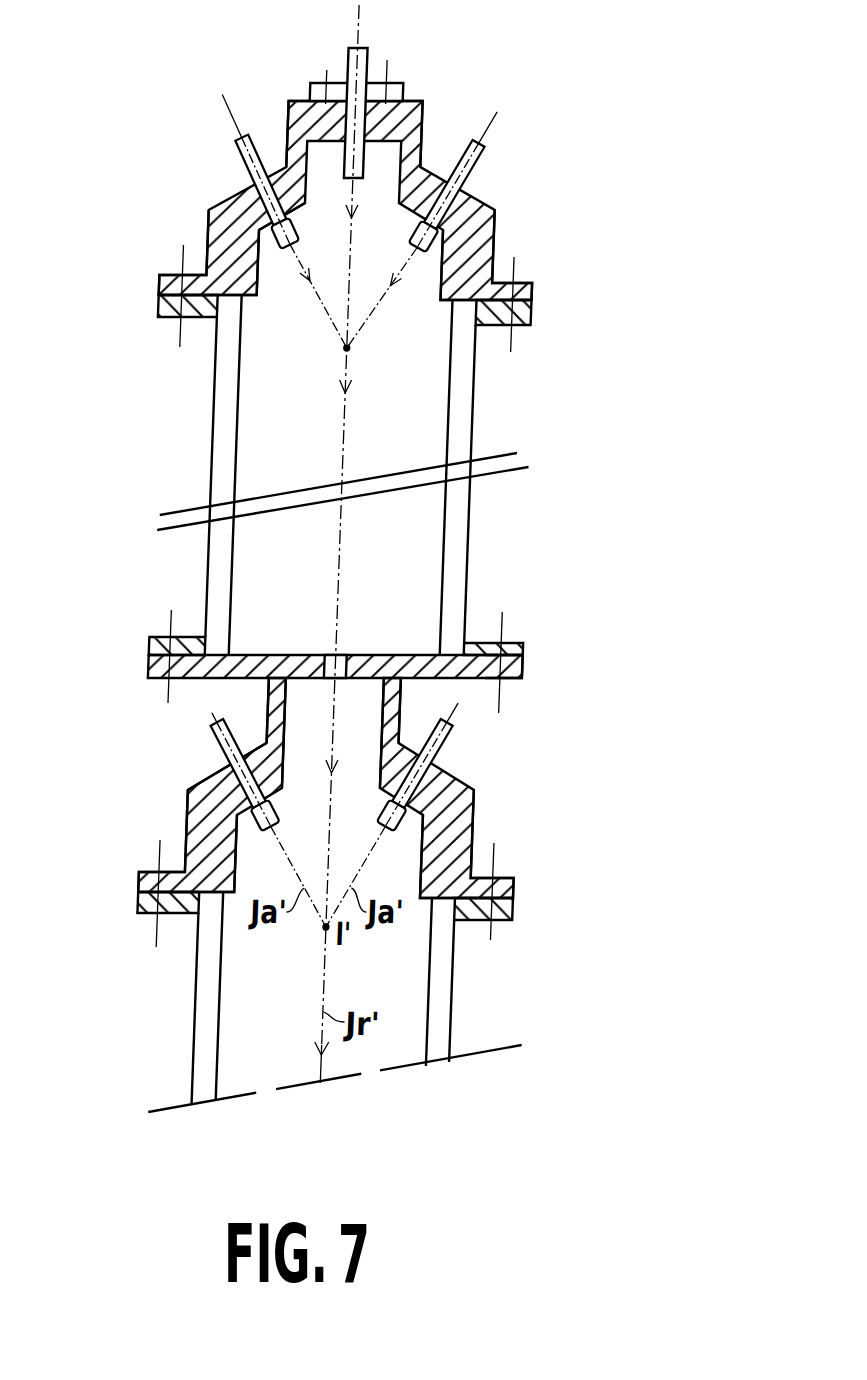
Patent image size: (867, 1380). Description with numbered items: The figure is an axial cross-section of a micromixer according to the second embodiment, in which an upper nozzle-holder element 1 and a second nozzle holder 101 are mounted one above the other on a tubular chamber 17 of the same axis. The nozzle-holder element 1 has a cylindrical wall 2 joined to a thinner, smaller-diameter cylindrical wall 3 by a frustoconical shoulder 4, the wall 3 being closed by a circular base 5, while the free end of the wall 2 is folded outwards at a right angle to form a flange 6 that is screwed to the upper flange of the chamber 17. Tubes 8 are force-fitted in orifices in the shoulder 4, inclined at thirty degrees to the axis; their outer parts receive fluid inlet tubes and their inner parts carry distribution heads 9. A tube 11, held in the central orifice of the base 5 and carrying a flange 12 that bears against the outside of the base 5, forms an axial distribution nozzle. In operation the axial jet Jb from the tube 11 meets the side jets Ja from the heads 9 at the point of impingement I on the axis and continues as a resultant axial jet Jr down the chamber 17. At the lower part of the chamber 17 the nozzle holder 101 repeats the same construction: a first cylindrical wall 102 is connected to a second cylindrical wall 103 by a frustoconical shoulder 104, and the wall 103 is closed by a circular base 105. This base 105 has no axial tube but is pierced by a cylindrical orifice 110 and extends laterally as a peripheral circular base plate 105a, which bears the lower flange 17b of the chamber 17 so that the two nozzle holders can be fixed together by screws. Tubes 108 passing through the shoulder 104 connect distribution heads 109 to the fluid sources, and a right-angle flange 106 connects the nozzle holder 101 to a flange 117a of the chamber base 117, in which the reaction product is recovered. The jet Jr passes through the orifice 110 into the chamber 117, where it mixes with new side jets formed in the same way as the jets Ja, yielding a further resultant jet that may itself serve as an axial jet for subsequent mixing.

The nozzle-holder element 1 is at (349, 173).
The cylindrical wall 2 is at (193, 245).
The cylindrical wall 3 is at (276, 156).
The frustoconical shoulder 4 is at (234, 169).
The circular base 5 is at (334, 98).
The flange 6 is at (533, 285).
The tube 8 is at (470, 179).
The distribution head 9 is at (489, 254).
The tube 11 is at (384, 89).
The flange 12 is at (351, 52).
The chamber 17 is at (338, 450).
The lower flange 17b is at (333, 609).
The nozzle holder 101 is at (122, 777).
The first cylindrical wall 102 is at (157, 841).
The second cylindrical wall 103 is at (262, 733).
The frustoconical shoulder 104 is at (193, 770).
The circular base 105 is at (336, 638).
The peripheral circular base plate 105a is at (542, 694).
The right angle flange 106 is at (525, 891).
The tubes 108 is at (181, 769).
The distribution heads 109 is at (501, 844).
The cylindrical orifice 110 is at (307, 620).
The chamber base 117 is at (128, 1000).
The flange 117a is at (133, 901).
The side jets Ja is at (350, 296).
The axial jet Jb is at (367, 221).
The resultant axial jet Jr is at (363, 544).
The point of impingement I is at (357, 357).